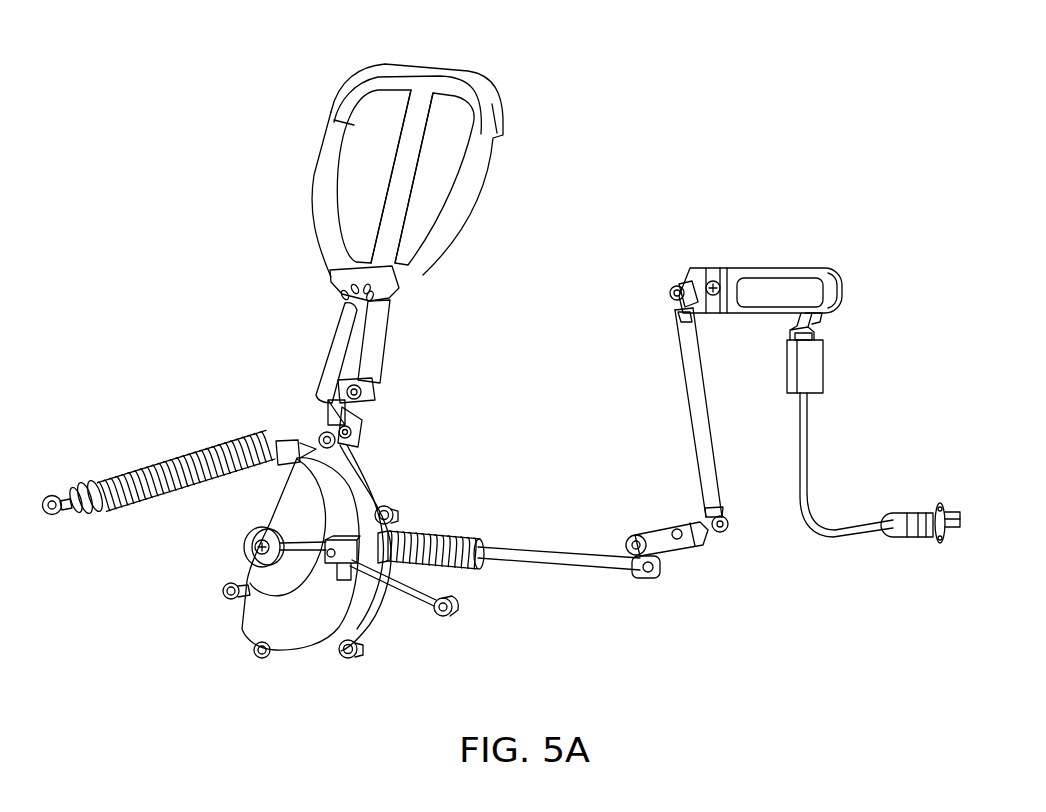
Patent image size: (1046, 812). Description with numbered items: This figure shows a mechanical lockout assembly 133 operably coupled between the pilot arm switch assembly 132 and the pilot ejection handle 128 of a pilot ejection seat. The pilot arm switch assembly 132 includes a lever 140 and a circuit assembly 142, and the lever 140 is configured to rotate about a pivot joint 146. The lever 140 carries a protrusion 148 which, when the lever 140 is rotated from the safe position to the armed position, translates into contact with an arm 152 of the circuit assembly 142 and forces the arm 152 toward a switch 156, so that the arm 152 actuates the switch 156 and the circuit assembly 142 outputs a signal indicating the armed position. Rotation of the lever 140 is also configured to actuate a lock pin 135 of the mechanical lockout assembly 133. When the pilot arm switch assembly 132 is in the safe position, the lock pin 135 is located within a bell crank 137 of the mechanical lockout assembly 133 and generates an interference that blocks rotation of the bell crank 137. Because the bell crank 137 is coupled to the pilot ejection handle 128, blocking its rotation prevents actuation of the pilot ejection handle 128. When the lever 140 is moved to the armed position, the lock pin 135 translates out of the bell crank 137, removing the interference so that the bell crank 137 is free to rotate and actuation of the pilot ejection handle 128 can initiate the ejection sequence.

The pilot ejection handle 128 is at (427, 92).
The pilot arm switch assembly 132 is at (772, 357).
The mechanical lockout assembly 133 is at (352, 525).
The lock pin 135 is at (483, 552).
The bell crank 137 is at (293, 487).
The lever 140 is at (802, 292).
The circuit assembly 142 is at (812, 373).
The pivot joint 146 is at (670, 296).
The protrusion 148 is at (821, 313).
The arm 152 is at (790, 328).
The switch 156 is at (813, 342).